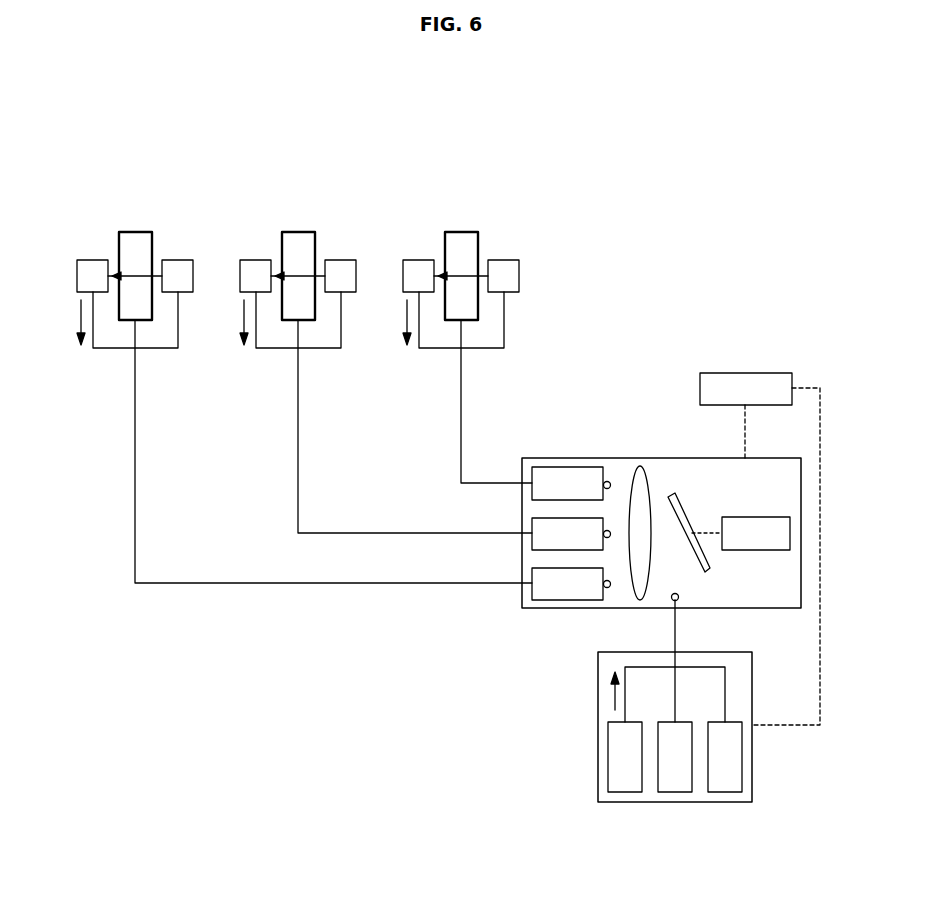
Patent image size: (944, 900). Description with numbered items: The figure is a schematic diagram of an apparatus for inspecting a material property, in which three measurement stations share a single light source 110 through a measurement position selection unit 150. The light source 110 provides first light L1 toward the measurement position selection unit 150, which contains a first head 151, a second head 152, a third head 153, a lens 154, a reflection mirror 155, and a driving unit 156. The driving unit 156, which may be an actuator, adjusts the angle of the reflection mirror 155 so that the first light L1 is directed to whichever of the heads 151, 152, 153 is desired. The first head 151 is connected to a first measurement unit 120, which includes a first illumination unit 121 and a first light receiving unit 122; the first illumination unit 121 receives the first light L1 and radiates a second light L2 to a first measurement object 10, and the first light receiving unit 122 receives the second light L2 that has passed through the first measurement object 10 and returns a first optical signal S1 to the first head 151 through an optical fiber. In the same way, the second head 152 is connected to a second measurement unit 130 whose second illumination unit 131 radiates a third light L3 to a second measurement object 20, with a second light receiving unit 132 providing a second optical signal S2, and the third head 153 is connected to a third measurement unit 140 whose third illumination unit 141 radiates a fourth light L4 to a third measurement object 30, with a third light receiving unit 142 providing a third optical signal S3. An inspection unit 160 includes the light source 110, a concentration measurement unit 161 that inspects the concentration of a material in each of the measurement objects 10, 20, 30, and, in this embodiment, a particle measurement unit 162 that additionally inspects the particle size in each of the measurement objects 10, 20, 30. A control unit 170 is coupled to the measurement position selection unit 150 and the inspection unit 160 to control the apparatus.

The first measurement unit 120 is at (110, 190).
The first illumination unit 121 is at (178, 258).
The first light receiving unit 122 is at (92, 258).
The second measurement unit 130 is at (273, 190).
The second illumination unit 131 is at (341, 258).
The second light receiving unit 132 is at (255, 258).
The third measurement unit 140 is at (436, 190).
The third illumination unit 141 is at (504, 258).
The third light receiving unit 142 is at (418, 258).
The first measurement object 10 is at (120, 320).
The second measurement object 20 is at (283, 320).
The third measurement object 30 is at (446, 320).
The first light L1 is at (610, 692).
The second light L2 is at (133, 273).
The third light L3 is at (296, 273).
The fourth light L4 is at (459, 273).
The first optical signal S1 is at (79, 324).
The second optical signal S2 is at (242, 324).
The third optical signal S3 is at (405, 324).
The measurement position selection unit 150 is at (801, 458).
The first head 151 is at (522, 568).
The second head 152 is at (522, 518).
The third head 153 is at (522, 468).
The lens 154 is at (640, 465).
The reflection mirror 155 is at (708, 573).
The driving unit 156 is at (790, 518).
The control unit 170 is at (792, 373).
The inspection unit 160 is at (752, 802).
The light source 110 is at (625, 805).
The concentration measurement unit 161 is at (675, 805).
The particle measurement unit 162 is at (725, 805).